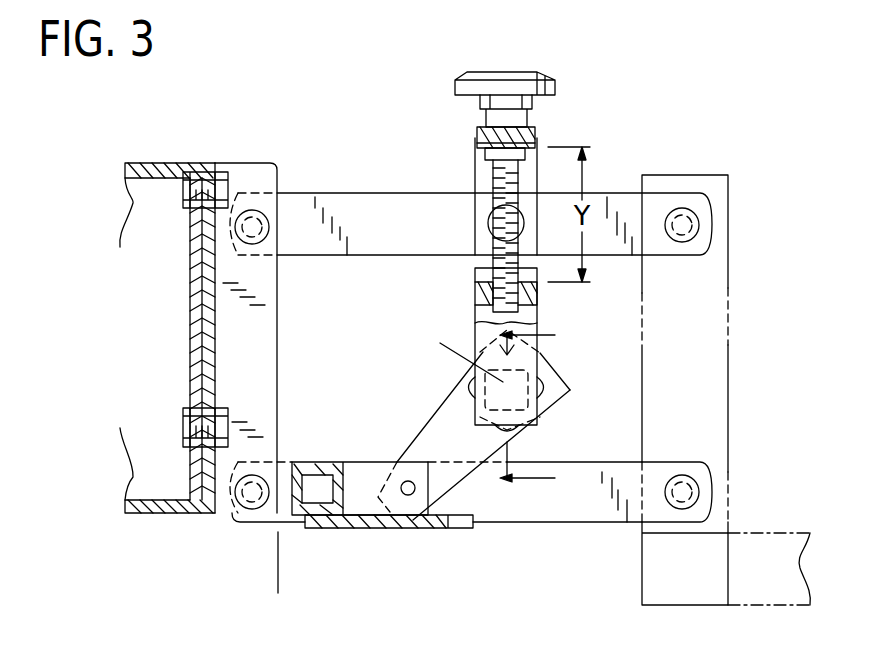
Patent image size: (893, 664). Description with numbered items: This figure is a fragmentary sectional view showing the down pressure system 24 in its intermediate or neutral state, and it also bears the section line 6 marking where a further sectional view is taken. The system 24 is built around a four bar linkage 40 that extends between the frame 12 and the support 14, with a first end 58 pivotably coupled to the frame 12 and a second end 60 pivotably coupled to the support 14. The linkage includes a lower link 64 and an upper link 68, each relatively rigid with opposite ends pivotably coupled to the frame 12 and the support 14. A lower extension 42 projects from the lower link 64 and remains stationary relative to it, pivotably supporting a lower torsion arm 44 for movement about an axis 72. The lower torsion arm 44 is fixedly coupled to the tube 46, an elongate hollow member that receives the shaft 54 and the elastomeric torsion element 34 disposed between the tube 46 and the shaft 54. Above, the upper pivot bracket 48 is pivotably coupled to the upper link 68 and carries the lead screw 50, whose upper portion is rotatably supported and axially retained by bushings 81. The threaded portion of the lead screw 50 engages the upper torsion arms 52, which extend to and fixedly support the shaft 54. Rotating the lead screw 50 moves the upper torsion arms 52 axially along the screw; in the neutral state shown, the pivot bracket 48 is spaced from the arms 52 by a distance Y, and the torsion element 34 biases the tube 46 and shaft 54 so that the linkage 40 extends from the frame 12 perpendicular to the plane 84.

The frame 12 is at (148, 160).
The support 14 is at (702, 300).
The down pressure system 24 is at (630, 112).
The elastomeric torsion element 34 is at (545, 357).
The four bar linkage 40 is at (347, 186).
The lower extensions 42 is at (388, 528).
The lower torsion arms 44 is at (430, 417).
The tube 46 is at (572, 392).
The upper pivot bracket 48 is at (537, 138).
The lead screw 50 is at (472, 76).
The upper torsion arms 52 is at (478, 296).
The shaft 54 is at (470, 366).
The first end 58 is at (258, 186).
The second end 60 is at (673, 186).
The lower link 64 is at (538, 515).
The upper link 68 is at (402, 205).
The axis 72 is at (412, 496).
The bushings 81 is at (478, 130).
The plane 84 is at (272, 560).
The section line 6- 6 is at (538, 407).